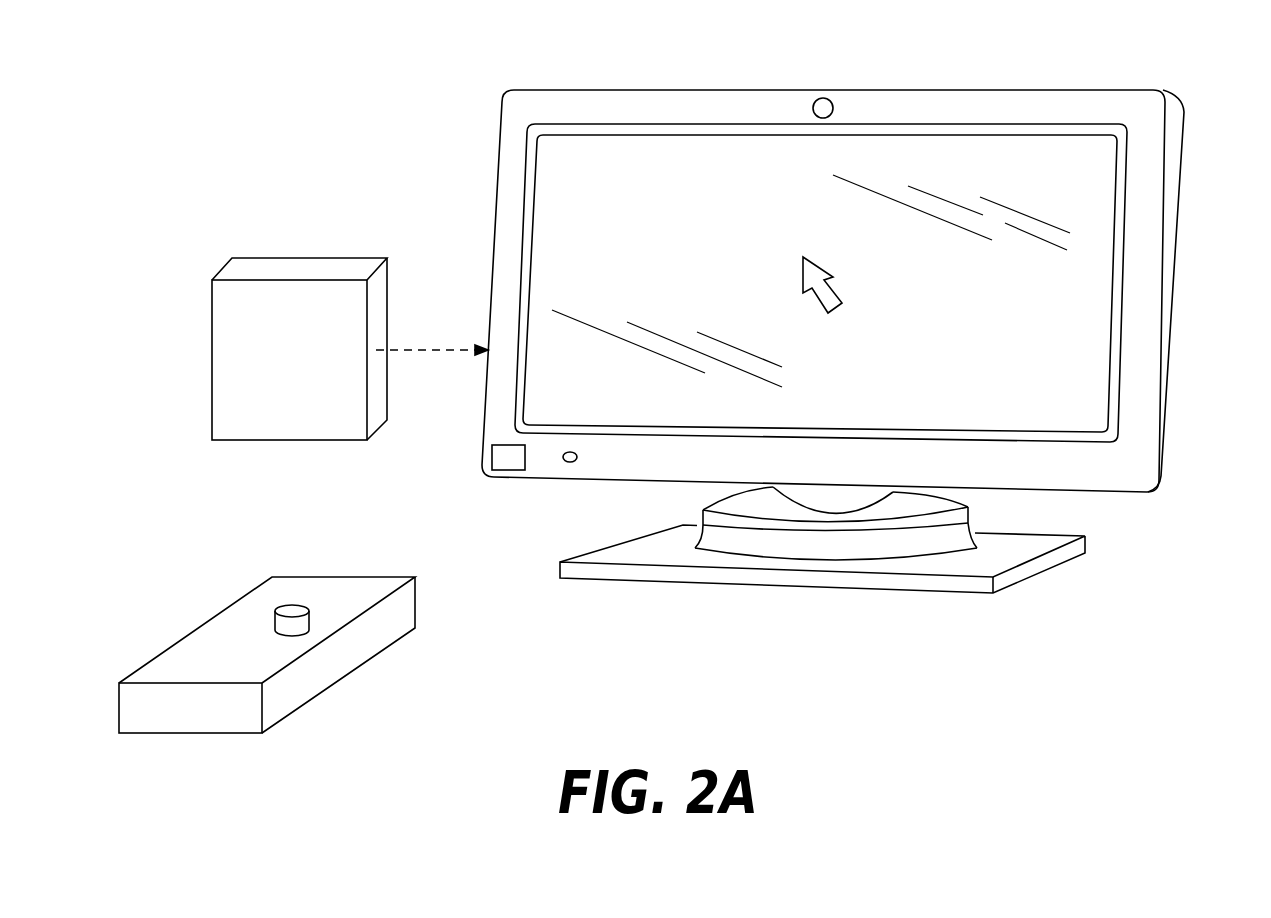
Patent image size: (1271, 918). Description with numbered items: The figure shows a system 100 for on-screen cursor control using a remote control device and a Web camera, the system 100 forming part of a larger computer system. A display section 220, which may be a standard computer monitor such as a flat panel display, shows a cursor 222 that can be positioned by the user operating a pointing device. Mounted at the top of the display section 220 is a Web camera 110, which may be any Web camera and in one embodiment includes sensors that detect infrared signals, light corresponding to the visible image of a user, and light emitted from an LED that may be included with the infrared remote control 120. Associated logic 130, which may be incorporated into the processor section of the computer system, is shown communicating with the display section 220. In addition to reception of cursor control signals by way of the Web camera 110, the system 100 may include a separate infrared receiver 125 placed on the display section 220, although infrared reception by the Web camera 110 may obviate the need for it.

The system 100 is at (316, 94).
The Web camera 110 is at (828, 98).
The infrared remote control 120 is at (232, 627).
The infrared receiver 125 is at (503, 468).
The logic 130 is at (262, 266).
The display section 220 is at (1168, 278).
The cursor 222 is at (827, 287).